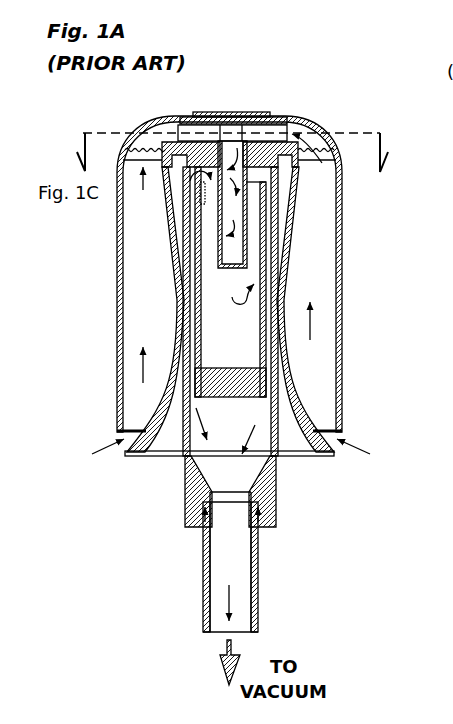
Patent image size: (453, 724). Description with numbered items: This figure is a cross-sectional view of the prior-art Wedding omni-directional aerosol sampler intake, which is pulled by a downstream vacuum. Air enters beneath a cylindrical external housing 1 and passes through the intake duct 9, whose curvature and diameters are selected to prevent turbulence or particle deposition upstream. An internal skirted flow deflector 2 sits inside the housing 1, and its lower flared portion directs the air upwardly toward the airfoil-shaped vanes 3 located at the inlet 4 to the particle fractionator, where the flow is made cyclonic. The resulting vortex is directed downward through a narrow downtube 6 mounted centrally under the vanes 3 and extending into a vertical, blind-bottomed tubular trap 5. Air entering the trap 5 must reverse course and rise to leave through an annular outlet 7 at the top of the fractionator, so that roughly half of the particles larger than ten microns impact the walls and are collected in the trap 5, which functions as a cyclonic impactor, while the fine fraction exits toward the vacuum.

The cylindrical external housing 1 is at (112, 283).
The internal skirted flow deflector 2 is at (174, 309).
The airfoil-shaped vanes 3 is at (269, 133).
The inlet 4 is at (224, 158).
The tubular trap 5 is at (238, 358).
The downtube 6 is at (235, 263).
The annular outlet 7 is at (190, 172).
The intake duct 9 is at (158, 303).